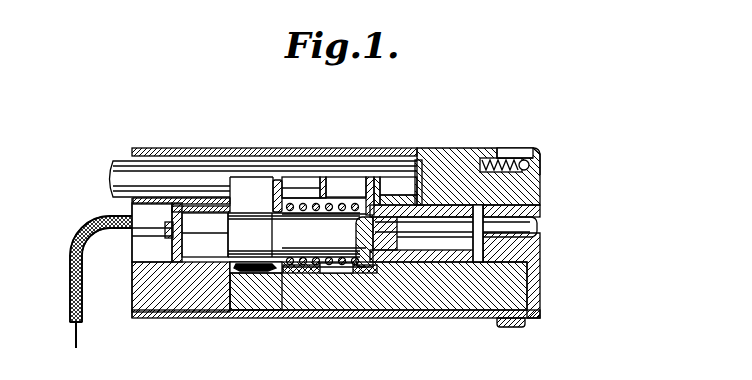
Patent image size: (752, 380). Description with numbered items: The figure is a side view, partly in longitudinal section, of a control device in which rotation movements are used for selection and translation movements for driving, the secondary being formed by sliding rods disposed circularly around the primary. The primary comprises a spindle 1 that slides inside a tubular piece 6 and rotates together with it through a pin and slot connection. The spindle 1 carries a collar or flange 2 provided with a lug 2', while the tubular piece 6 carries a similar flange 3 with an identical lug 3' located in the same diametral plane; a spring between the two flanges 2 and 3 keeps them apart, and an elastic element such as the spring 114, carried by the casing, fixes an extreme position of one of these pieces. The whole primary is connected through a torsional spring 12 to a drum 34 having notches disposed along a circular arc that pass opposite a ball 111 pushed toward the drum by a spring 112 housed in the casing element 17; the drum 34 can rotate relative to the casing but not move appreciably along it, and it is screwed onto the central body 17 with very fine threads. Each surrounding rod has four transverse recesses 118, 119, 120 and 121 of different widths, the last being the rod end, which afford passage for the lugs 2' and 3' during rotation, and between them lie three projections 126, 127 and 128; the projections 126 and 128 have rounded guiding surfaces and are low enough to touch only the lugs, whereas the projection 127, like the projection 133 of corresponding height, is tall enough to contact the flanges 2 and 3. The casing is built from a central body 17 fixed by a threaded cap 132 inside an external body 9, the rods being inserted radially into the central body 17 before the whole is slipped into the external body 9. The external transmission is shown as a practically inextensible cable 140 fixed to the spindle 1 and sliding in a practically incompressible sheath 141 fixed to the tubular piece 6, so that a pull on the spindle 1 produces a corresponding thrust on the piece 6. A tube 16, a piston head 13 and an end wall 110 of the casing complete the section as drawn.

The spindle 1 is at (238, 229).
The collar or flange 2 is at (378, 306).
The lug 2' is at (328, 168).
The collar or flange 3 is at (258, 300).
The lug 3' is at (197, 165).
The tubular piece 6 is at (181, 264).
The external body 9 is at (143, 291).
The torsional spring 12 is at (423, 232).
The piston head 13 is at (362, 265).
The tube 16 is at (143, 174).
The central body 17 is at (455, 175).
The drum 34 is at (523, 261).
The cap wall 110 is at (529, 163).
The ball 111 is at (530, 154).
The spring 112 is at (498, 152).
The spring 114 is at (263, 272).
The transverse recess 118 is at (274, 182).
The transverse recess 119 is at (324, 180).
The transverse recess 120 is at (377, 180).
The transverse recess 121 is at (418, 162).
The projection 126 is at (290, 183).
The projection 127 is at (346, 187).
The projection 128 is at (392, 180).
The threaded cap 132 is at (513, 320).
The projection 133 is at (305, 268).
The cable 140 is at (211, 238).
The sheath 141 is at (71, 273).